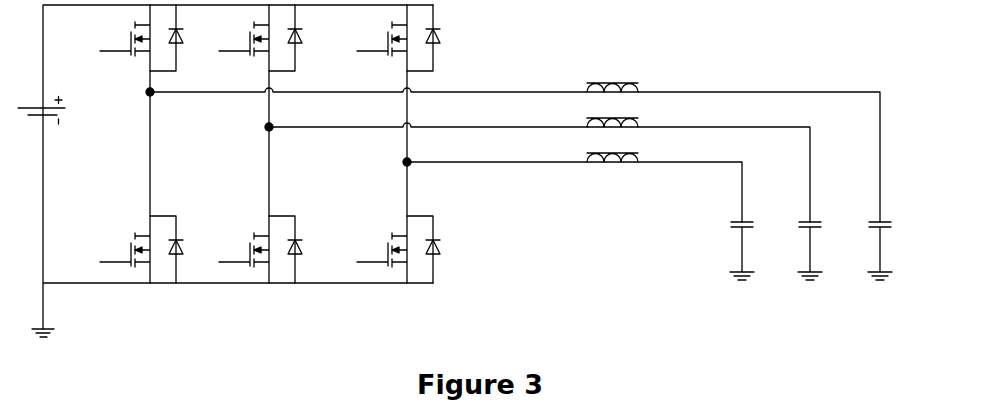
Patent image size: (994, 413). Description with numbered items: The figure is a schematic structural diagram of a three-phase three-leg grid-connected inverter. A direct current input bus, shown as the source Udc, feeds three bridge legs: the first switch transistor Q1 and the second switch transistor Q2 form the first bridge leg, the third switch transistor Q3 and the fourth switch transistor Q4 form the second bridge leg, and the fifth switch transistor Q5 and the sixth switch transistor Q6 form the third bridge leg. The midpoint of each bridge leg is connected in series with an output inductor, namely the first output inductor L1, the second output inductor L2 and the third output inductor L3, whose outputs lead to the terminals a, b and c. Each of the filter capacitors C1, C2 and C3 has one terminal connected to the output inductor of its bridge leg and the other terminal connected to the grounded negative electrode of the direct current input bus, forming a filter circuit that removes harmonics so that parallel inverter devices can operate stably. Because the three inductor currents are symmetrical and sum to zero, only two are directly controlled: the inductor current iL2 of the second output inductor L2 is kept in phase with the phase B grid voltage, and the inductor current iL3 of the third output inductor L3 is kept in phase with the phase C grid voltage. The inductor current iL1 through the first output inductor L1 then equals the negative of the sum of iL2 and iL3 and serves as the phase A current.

The first switch transistor Q1 is at (133, 38).
The second switch transistor Q2 is at (133, 249).
The third switch transistor Q3 is at (257, 38).
The fourth switch transistor Q4 is at (257, 249).
The fifth switch transistor Q5 is at (394, 38).
The sixth switch transistor Q6 is at (394, 249).
The first output inductor L1 is at (612, 74).
The second output inductor L2 is at (612, 110).
The third output inductor L3 is at (612, 145).
The filter capacitor C1 is at (893, 247).
The filter capacitor C2 is at (823, 247).
The filter capacitor C3 is at (755, 247).
The DC bus voltage source Udc is at (61, 114).
The inductor current of the first output inductor iL1 is at (686, 73).
The inductor current of the second output inductor iL2 is at (686, 111).
The inductor current of the third output inductor iL3 is at (686, 146).
The output terminal a is at (896, 92).
The output terminal b is at (828, 127).
The output terminal c is at (752, 158).